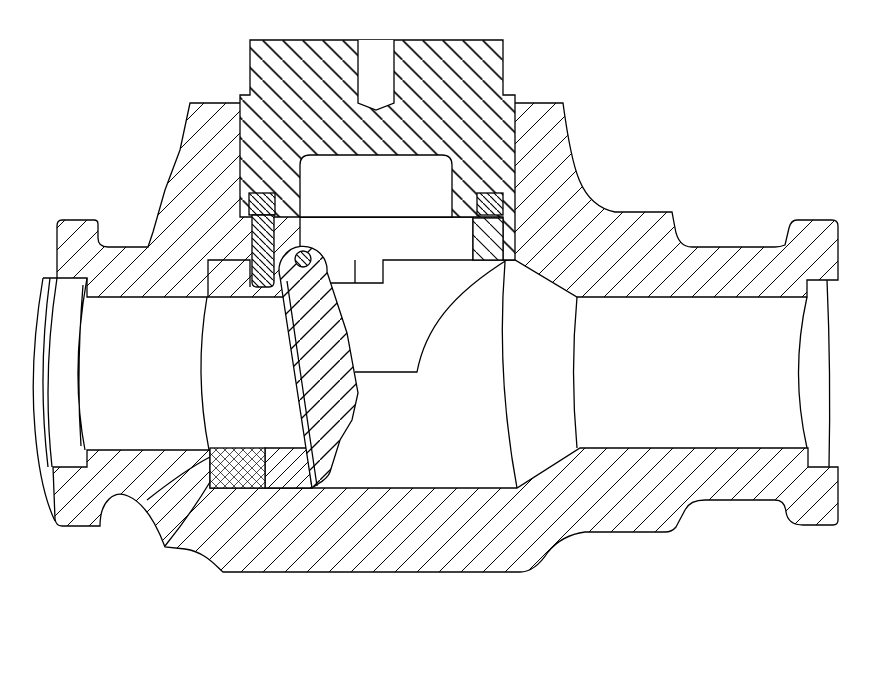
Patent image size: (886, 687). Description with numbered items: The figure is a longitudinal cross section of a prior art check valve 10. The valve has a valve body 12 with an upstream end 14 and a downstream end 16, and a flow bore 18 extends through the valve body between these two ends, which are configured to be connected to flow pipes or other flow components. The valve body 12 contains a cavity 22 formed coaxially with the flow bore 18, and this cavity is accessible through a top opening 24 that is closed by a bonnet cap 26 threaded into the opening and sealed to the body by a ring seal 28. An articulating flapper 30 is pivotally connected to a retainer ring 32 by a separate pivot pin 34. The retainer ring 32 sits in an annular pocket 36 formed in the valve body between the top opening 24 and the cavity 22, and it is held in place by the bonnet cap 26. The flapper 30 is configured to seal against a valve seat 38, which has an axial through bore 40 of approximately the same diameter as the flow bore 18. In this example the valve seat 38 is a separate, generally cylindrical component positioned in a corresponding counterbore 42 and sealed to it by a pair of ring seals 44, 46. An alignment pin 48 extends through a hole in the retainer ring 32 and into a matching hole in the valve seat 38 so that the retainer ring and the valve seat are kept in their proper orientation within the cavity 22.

The check valve 10 is at (698, 81).
The valve body 12 is at (650, 211).
The upstream end 14 is at (76, 527).
The downstream end 16 is at (815, 526).
The flow bore 18 is at (622, 372).
The cavity 22 is at (436, 373).
The top opening 24 is at (513, 157).
The bonnet cap 26 is at (506, 62).
The ring seal 28 is at (248, 205).
The flapper 30 is at (348, 407).
The retainer ring 32 is at (412, 262).
The pivot pin 34 is at (312, 257).
The annular pocket 36 is at (473, 232).
The valve seat 38 is at (293, 474).
The axial through bore 40 is at (252, 447).
The counterbore 42 is at (266, 449).
The ring seal 44 is at (147, 500).
The ring seal 46 is at (160, 532).
The alignment pin 48 is at (252, 240).